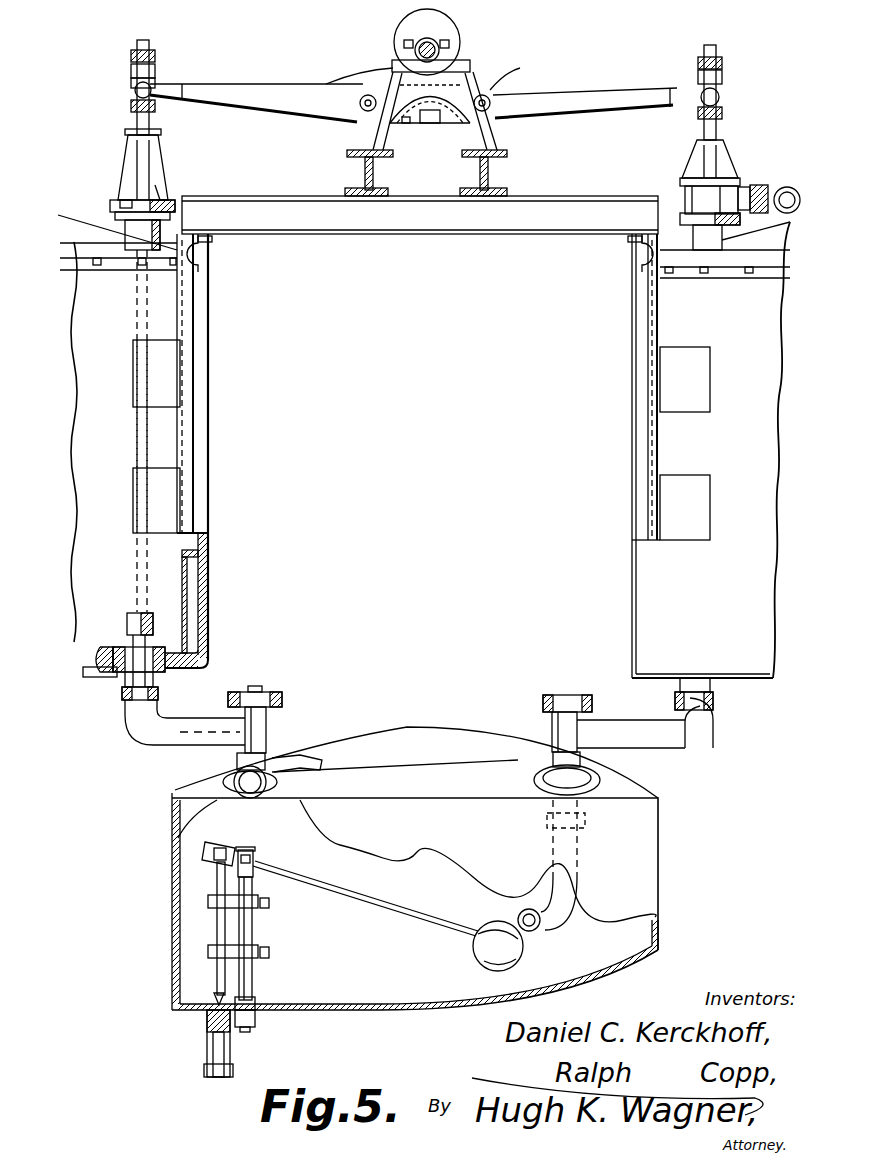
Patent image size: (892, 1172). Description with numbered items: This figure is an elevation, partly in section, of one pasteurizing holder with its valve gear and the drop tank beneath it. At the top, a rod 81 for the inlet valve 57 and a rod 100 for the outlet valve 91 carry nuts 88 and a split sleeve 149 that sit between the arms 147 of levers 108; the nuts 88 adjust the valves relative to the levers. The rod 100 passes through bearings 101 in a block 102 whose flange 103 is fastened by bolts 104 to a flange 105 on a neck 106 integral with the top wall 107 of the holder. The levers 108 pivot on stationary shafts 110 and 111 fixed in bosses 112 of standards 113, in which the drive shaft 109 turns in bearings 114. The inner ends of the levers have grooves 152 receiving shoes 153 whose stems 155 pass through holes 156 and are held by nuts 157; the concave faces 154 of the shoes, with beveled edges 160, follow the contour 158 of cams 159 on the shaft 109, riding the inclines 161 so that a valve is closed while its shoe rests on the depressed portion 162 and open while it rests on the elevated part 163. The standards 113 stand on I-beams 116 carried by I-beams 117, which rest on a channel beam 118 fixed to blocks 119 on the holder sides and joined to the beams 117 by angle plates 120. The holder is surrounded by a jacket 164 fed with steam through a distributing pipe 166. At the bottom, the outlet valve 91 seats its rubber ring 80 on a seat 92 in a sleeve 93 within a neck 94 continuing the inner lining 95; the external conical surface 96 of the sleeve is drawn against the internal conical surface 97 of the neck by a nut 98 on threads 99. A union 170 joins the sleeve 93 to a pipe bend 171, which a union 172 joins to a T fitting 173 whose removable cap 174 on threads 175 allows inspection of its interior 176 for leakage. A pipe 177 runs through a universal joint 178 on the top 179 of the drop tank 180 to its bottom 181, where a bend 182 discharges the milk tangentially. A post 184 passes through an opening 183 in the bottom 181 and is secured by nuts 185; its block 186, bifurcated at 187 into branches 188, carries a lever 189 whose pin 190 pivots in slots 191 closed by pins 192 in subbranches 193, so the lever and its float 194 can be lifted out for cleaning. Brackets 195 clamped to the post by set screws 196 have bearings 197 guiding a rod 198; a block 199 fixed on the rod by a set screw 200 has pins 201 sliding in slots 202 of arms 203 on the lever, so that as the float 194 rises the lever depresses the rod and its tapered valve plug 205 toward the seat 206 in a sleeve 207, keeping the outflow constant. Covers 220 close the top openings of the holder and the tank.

The inlet valve 57 is at (700, 165).
The rubber ring 80 is at (155, 635).
The rod 81 is at (718, 52).
The nuts 88 is at (130, 58).
The outlet valve 91 is at (125, 628).
The seat 92 is at (144, 655).
The sleeve 93 is at (118, 694).
The neck 94 is at (108, 680).
The inner lining 95 is at (92, 645).
The external conical surface 96 is at (210, 662).
The internal conical surface 97 is at (78, 637).
The nut 98 is at (162, 678).
The threads 99 is at (106, 690).
The rod 100 is at (140, 40).
The bearings 101 is at (150, 140).
The block 102 is at (122, 162).
The flange 103 is at (120, 203).
The bolts 104 is at (160, 190).
The flange 105 is at (112, 212).
The neck 106 is at (135, 240).
The top wall 107 is at (117, 232).
The levers 108 is at (421, 101).
The drive shaft 109 is at (440, 48).
The stationary shaft 110 is at (359, 73).
The stationary shaft 111 is at (517, 76).
The bosses 112 is at (360, 105).
The standards 113 is at (368, 138).
The bearings 114 is at (418, 55).
The I-beams 116 is at (478, 176).
The I-beams 117 is at (420, 215).
The channel beam 118 is at (198, 325).
The blocks 119 is at (165, 370).
The angle plates 120 is at (212, 250).
The arms 147 is at (172, 92).
The sleeve 149 is at (130, 82).
The transverse grooves 152 is at (427, 111).
The shoes 153 is at (470, 90).
The concave top faces 154 is at (500, 55).
The stems 155 is at (429, 115).
The holes 156 is at (540, 153).
The nuts 157 is at (478, 128).
The cam contour 158 is at (375, 60).
The cams 159 is at (418, 26).
The beveled edges 160 is at (372, 126).
The inclines 161 is at (398, 78).
The depressed portion 162 is at (433, 26).
The elevated part 163 is at (418, 70).
The jacket 164 is at (210, 624).
The distributing pipe 166 is at (75, 252).
The union 170 is at (122, 718).
The pipe bend 171 is at (152, 745).
The union 172 is at (546, 820).
The T fitting 173 is at (268, 728).
The removable cap 174 is at (283, 698).
The threads 175 is at (240, 698).
The interior 176 is at (245, 732).
The pipe 177 is at (238, 762).
The universal joint 178 is at (256, 792).
The top 179 is at (415, 868).
The drop tank 180 is at (175, 902).
The bottom 181 is at (645, 960).
The bend 182 is at (540, 910).
The opening 183 is at (262, 1012).
The post 184 is at (254, 935).
The nuts 185 is at (256, 1002).
The block 186 is at (252, 884).
The bifurcation 187 is at (417, 861).
The branches 188 is at (256, 862).
The lever 189 is at (402, 902).
The pin 190 is at (236, 874).
The slots 191 is at (258, 842).
The pins 192 is at (256, 854).
The subbranches 193 is at (262, 846).
The float 194 is at (476, 950).
The brackets 195 is at (208, 948).
The set screws 196 is at (269, 906).
The bearings 197 is at (206, 902).
The rod 198 is at (216, 934).
The block 199 is at (212, 845).
The set screw 200 is at (206, 850).
The pins 201 is at (206, 860).
The slots 202 is at (206, 846).
The arms 203 is at (206, 855).
The valve plug 205 is at (210, 1003).
The seat 206 is at (208, 1014).
The sleeve 207 is at (206, 1060).
The covers 220 is at (438, 743).